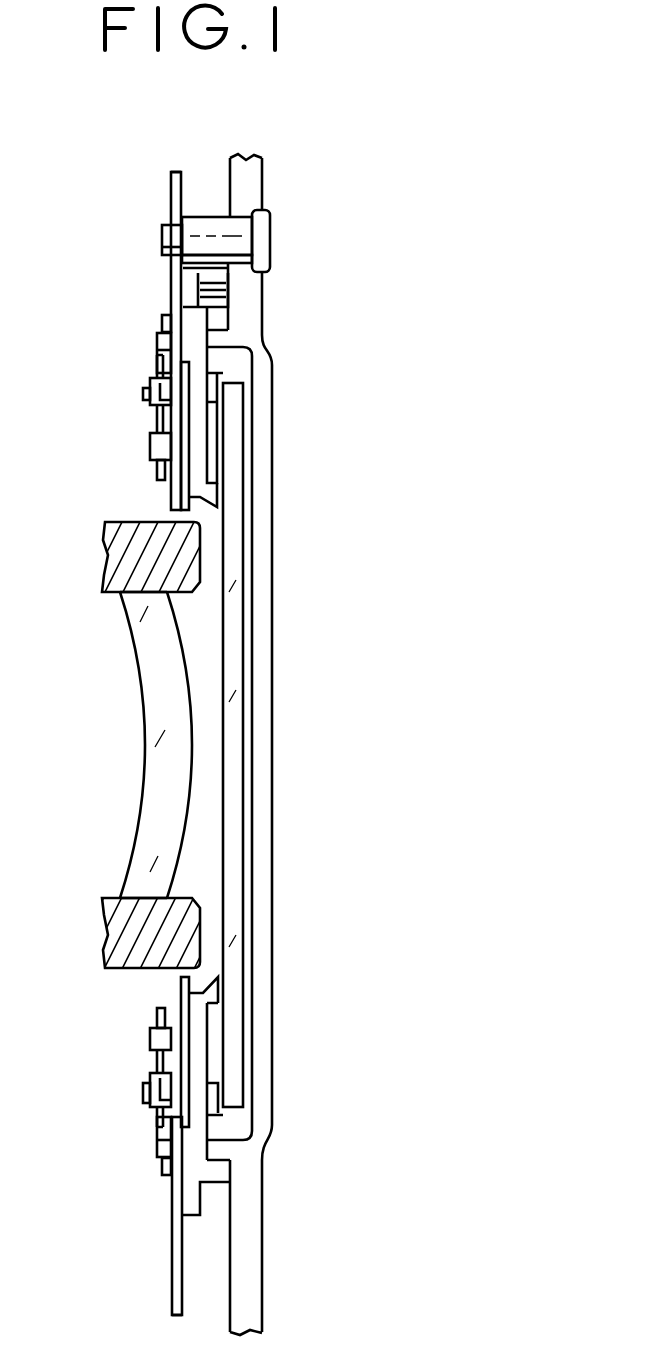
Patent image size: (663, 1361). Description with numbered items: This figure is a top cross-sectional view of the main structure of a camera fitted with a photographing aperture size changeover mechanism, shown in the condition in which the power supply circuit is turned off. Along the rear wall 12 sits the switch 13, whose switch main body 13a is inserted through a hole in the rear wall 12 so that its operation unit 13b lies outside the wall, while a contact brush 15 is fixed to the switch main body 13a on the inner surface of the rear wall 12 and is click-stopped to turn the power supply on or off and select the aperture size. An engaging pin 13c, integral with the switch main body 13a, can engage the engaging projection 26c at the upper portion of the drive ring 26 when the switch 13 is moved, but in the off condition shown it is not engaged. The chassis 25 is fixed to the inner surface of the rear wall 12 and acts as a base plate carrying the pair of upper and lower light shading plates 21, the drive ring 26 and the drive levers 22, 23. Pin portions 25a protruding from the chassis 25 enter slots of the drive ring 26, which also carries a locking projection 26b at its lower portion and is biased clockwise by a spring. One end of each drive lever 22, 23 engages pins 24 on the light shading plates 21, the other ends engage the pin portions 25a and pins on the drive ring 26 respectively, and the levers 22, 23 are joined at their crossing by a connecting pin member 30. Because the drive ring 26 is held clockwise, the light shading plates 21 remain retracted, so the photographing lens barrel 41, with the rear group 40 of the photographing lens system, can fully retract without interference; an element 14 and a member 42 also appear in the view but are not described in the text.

The rear wall 12 is at (250, 175).
The switch 13 is at (300, 211).
The switch main body 13a is at (265, 240).
The operation unit 13b is at (253, 260).
The engaging pin 13c is at (165, 235).
The frame 14 is at (262, 415).
The contact brush 15 is at (215, 292).
The light shading plates 21 is at (185, 500).
The drive lever 22 is at (163, 322).
The drive lever 23 is at (160, 477).
The pins 24 is at (155, 445).
The chassis 25 is at (208, 378).
The pin portions 25a is at (160, 352).
The drive ring 26 is at (172, 283).
The locking projection 26b is at (180, 1283).
The engaging projection 26c is at (172, 173).
The connecting pin member 30 is at (150, 397).
The rear group of the photographing lens system 40 is at (150, 686).
The photographing lens barrel 41 is at (108, 560).
The glass plate 42 is at (235, 695).